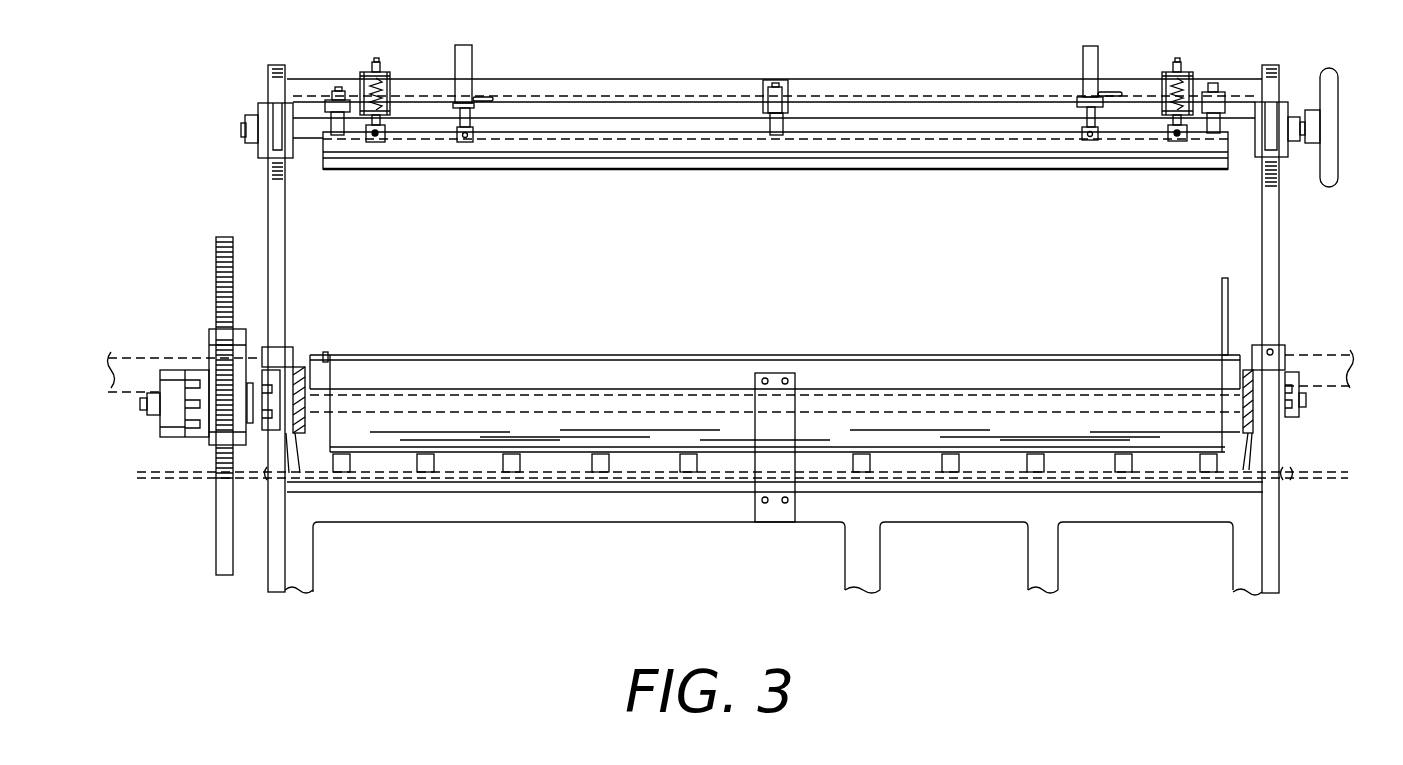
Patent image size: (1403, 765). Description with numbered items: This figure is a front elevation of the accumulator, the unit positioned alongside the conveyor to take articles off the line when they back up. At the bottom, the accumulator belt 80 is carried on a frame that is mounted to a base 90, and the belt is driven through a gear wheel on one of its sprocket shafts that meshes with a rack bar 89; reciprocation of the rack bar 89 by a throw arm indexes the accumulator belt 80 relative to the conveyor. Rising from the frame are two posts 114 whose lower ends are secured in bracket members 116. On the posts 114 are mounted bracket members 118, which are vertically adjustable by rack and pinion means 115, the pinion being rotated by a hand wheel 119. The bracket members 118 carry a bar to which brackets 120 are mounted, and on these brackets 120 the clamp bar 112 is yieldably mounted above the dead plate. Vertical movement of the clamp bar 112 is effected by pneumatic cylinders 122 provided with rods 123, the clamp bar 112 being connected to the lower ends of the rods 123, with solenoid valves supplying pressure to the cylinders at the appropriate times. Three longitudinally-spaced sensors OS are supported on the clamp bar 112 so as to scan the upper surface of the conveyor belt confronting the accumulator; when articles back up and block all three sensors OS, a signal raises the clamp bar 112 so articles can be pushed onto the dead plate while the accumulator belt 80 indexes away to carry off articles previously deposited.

The accumulator belt 80 is at (695, 418).
The rack bar 89 is at (215, 270).
The base 90 is at (487, 513).
The clamp bar 112 is at (753, 170).
The posts 114 is at (285, 229).
The rack and pinion means 115 is at (1263, 188).
The bracket members 116 is at (1280, 358).
The bracket members 118 is at (258, 110).
The hand wheel 119 is at (1333, 113).
The brackets 120 is at (383, 71).
The pneumatic cylinders 122 is at (472, 63).
The rods 123 is at (683, 79).
The sensors OS is at (332, 92).